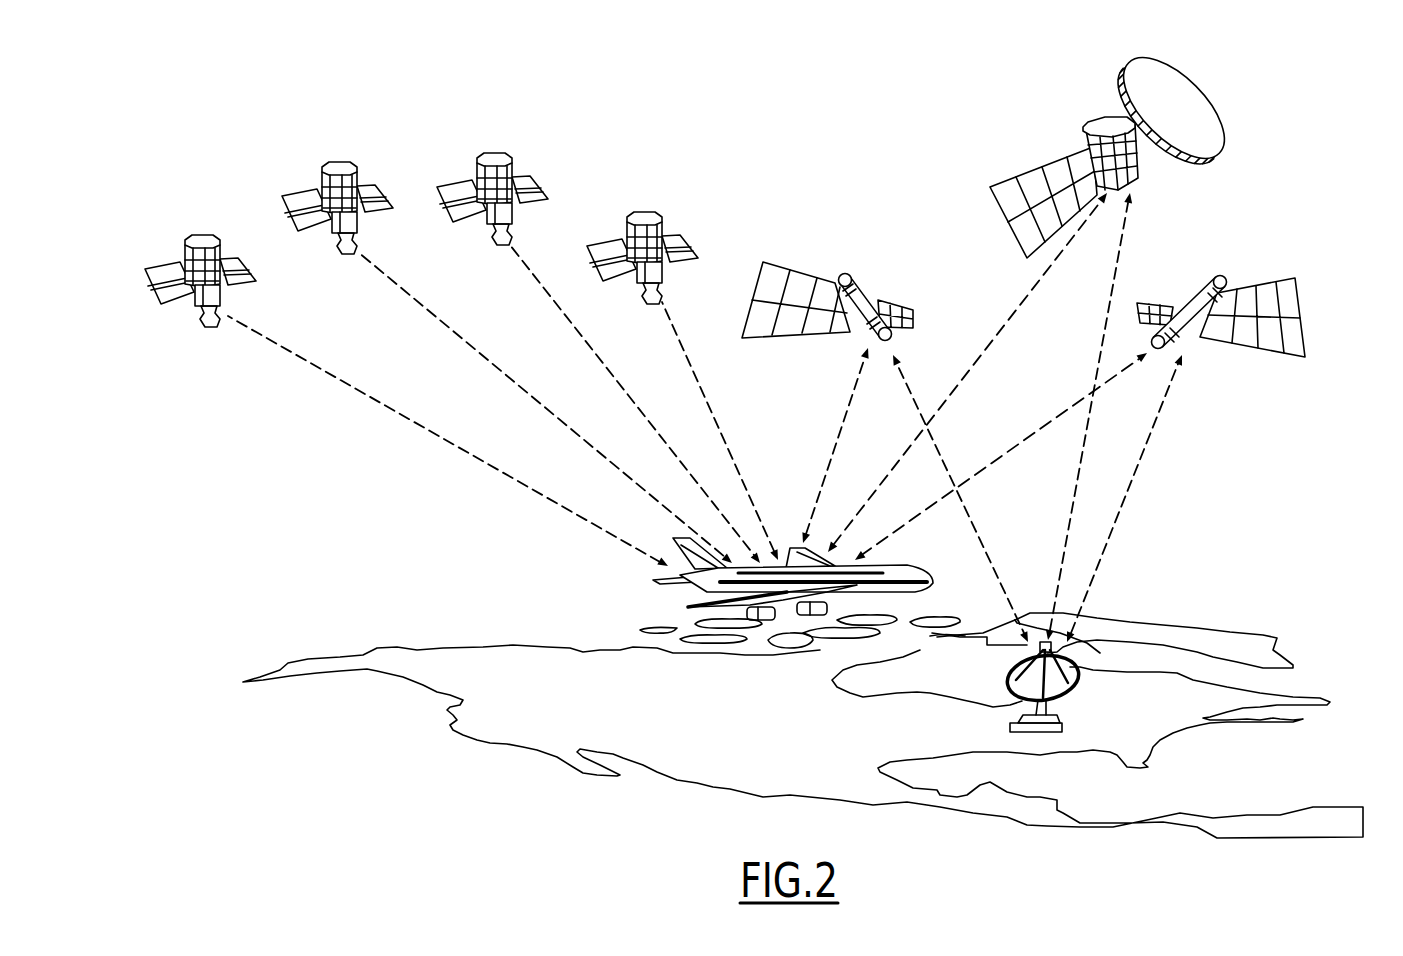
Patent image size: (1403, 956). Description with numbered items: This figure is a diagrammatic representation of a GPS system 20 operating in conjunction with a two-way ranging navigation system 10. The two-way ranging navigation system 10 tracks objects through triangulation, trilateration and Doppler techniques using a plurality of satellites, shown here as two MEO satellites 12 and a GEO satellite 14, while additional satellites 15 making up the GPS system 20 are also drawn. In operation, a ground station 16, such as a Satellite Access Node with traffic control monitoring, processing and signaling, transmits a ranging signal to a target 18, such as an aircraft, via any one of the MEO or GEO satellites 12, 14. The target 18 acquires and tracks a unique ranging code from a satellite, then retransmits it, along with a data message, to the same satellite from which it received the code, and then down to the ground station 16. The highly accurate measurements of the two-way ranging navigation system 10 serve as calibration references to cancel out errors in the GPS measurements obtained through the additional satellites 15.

The two-way ranging navigation system 10 is at (1350, 110).
The MEO satellite 12 is at (873, 297).
The GEO satellite 14 is at (1222, 112).
The additional satellites 15 is at (337, 226).
The ground station 16 is at (1077, 688).
The target 18 is at (898, 566).
The GPS system 20 is at (240, 133).